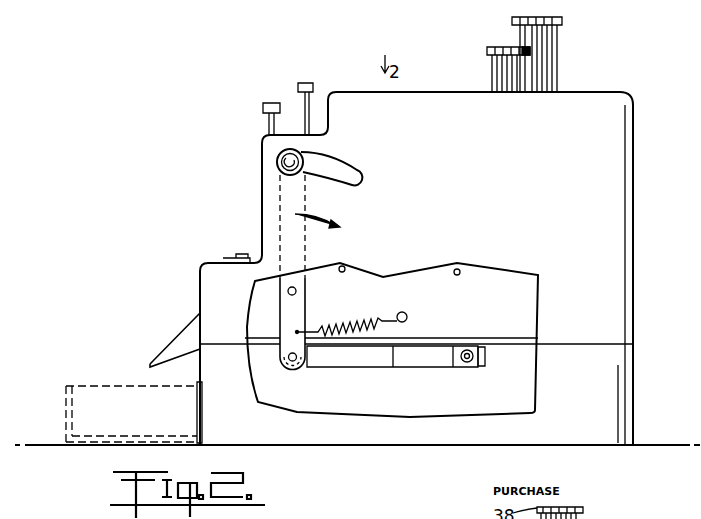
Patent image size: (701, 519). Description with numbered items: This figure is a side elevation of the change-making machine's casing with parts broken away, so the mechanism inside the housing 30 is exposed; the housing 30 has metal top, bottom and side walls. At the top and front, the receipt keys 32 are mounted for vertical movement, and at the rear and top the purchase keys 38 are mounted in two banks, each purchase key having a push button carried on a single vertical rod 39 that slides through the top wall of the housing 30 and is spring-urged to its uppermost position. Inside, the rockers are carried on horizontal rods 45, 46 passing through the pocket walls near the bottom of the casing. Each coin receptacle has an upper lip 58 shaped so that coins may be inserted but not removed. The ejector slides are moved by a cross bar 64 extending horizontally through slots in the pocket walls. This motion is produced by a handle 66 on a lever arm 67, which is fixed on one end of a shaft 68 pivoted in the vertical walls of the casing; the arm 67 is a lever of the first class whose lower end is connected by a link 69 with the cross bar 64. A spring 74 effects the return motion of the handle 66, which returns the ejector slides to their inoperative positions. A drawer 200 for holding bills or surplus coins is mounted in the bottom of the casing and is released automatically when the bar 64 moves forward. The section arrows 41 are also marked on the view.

The housing 30 is at (633, 222).
The receipt keys 32 is at (272, 103).
The purchase keys 38 is at (495, 47).
The vertical rod 39 is at (553, 70).
The section line 41 is at (262, 75).
The horizontal rod 45 is at (343, 266).
The horizontal rod 46 is at (458, 269).
The upper lip 58 is at (242, 256).
The cross bar 64 is at (477, 367).
The handle 66 is at (277, 160).
The lever arm 67 is at (305, 304).
The shaft 68 is at (296, 289).
The link 69 is at (343, 360).
The spring 74 is at (360, 316).
The drawer 200 is at (197, 410).